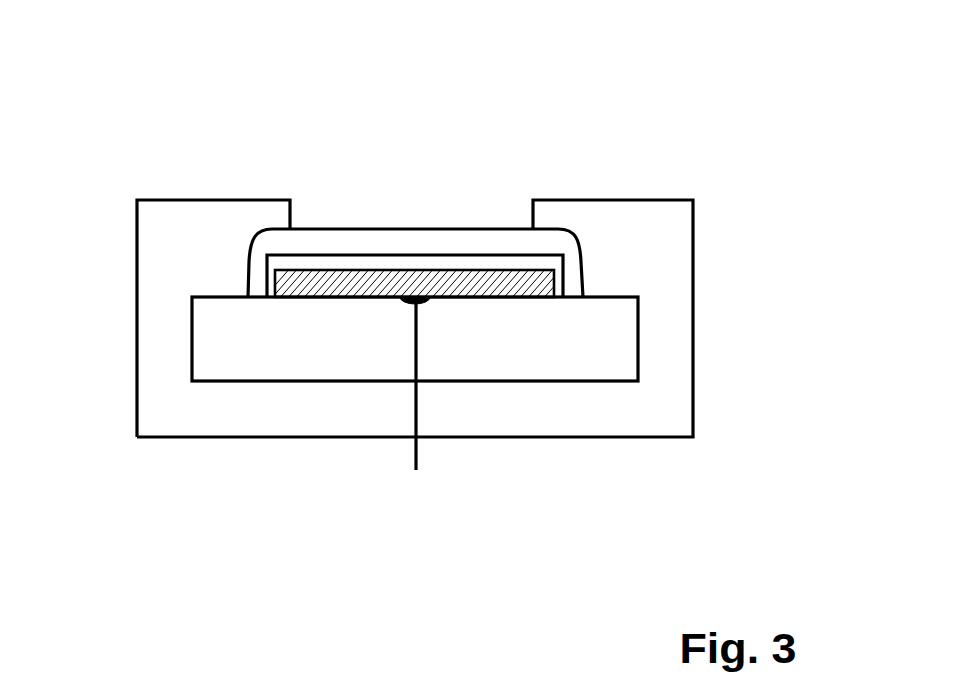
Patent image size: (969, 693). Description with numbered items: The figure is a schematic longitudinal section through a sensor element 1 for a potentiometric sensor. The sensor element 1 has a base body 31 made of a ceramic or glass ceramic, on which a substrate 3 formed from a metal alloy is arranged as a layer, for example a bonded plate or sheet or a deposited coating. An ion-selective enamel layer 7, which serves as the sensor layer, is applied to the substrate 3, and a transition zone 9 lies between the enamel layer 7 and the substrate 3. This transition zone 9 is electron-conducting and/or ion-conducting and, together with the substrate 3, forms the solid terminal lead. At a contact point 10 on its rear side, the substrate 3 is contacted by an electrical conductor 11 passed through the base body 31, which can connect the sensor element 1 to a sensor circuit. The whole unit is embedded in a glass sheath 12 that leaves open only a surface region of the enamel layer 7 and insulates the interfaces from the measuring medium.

The sensor element 1 is at (590, 133).
The substrate 3 is at (302, 280).
The ion-selective enamel layer 7 is at (572, 263).
The transition zone 9 is at (558, 287).
The contact point 10 is at (425, 302).
The electrical conductor 11 is at (418, 456).
The glass sheath 12 is at (163, 255).
The base body 31 is at (346, 350).